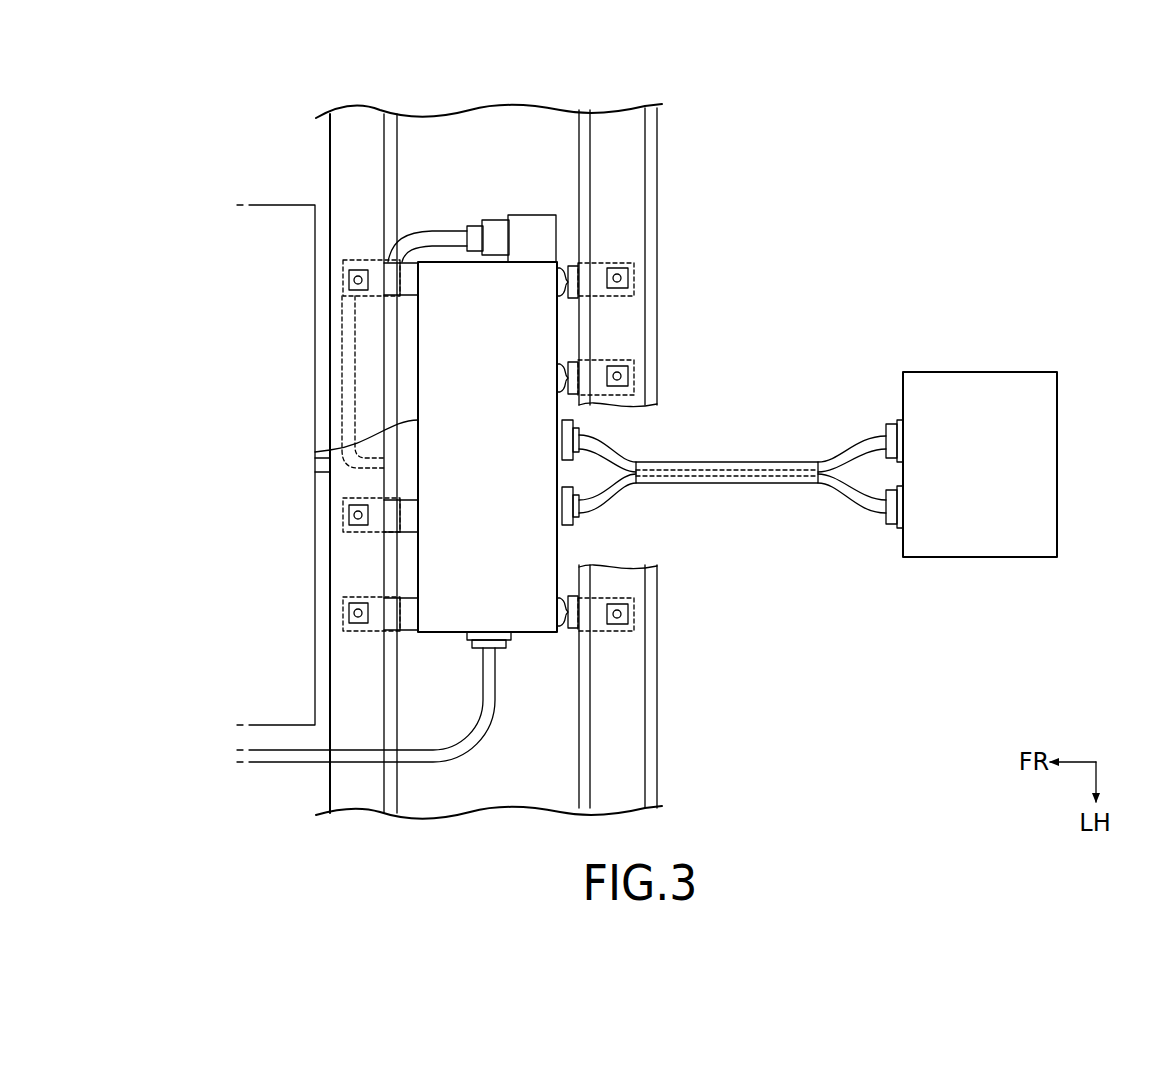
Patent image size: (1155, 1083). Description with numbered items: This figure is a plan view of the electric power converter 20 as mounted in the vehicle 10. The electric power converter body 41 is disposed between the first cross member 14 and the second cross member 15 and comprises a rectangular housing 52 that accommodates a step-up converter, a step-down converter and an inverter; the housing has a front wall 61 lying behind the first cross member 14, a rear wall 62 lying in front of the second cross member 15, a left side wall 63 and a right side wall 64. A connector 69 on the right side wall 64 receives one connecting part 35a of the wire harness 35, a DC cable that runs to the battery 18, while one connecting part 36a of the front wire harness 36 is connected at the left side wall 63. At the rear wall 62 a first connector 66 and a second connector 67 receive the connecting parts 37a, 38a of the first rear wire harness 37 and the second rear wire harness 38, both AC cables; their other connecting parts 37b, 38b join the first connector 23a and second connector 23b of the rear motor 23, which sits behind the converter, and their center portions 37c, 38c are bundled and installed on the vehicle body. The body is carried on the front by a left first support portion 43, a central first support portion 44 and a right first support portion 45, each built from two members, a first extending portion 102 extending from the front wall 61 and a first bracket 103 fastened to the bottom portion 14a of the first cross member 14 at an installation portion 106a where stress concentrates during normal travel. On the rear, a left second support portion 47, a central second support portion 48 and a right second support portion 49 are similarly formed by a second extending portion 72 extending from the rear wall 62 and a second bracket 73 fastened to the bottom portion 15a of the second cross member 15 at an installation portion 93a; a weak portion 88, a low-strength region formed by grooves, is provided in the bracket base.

The vehicle body structure 10 is at (851, 156).
The first cross member 14 is at (324, 130).
The bottom portion of first cross member 14a is at (360, 122).
The second cross member 15 is at (668, 135).
The bottom portion of second cross member 15a is at (625, 176).
The battery 18 is at (268, 212).
The electric power converter 20 is at (405, 220).
The rear motor 23 is at (1057, 450).
The first connector of rear motor 23a is at (893, 533).
The second connector of rear motor 23b is at (892, 420).
The wire harness 35 is at (426, 228).
The connecting part of wire harness 35a is at (470, 224).
The front wire harness 36 is at (430, 764).
The connecting part of front wire harness 36a is at (505, 652).
The first rear wire harness 37 is at (612, 500).
The connecting part of first rear wire harness 37a is at (575, 523).
The other connecting part of first rear wire harness 37b is at (875, 512).
The center portion of first rear wire harness 37c is at (740, 485).
The second rear wire harness 38 is at (612, 460).
The connecting part of second rear wire harness 38a is at (575, 418).
The other connecting part of second rear wire harness 38b is at (870, 433).
The center portion of second rear wire harness 38c is at (735, 463).
The electric power converter body 41 is at (410, 312).
The left first support portion 43 is at (265, 633).
The central first support portion 44 is at (344, 496).
The right first support portion 45 is at (342, 255).
The left second support portion 47 is at (695, 635).
The central second support portion 48 is at (598, 360).
The right second support portion 49 is at (598, 262).
The housing 52 is at (410, 353).
The front wall 61 is at (330, 450).
The rear wall 62 is at (557, 328).
The left side wall 63 is at (447, 633).
The right side wall 64 is at (500, 257).
The first connector 66 is at (562, 525).
The second connector 67 is at (560, 453).
The connector 69 is at (492, 222).
The second extending portion 72 is at (572, 262).
The second bracket 73 is at (620, 624).
The weak portion 88 is at (560, 282).
The installation portion 93a is at (628, 256).
The first extending portion 102 is at (410, 282).
The first bracket 103 is at (355, 283).
The installation portion 106a is at (378, 262).